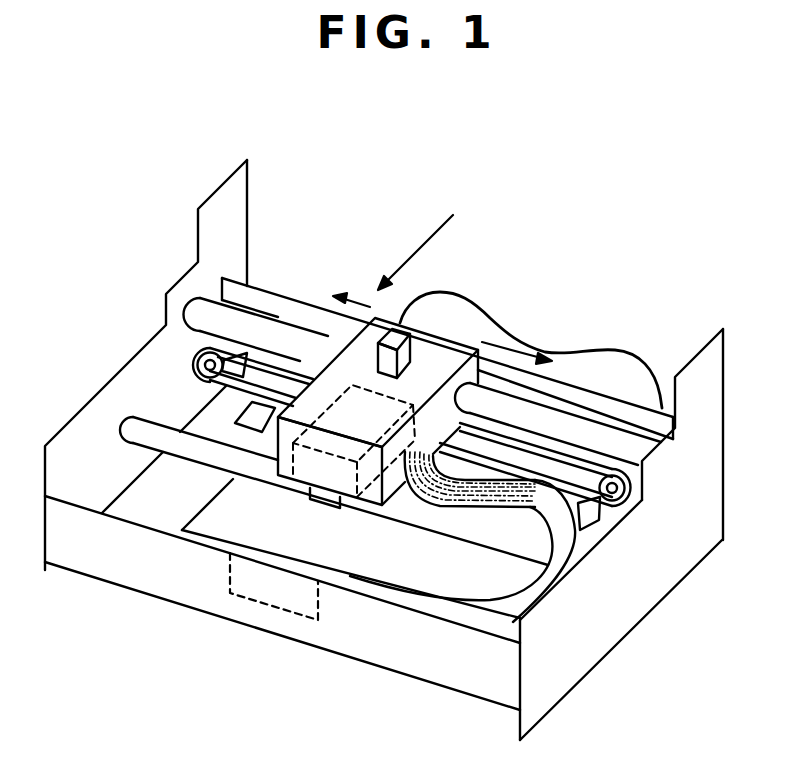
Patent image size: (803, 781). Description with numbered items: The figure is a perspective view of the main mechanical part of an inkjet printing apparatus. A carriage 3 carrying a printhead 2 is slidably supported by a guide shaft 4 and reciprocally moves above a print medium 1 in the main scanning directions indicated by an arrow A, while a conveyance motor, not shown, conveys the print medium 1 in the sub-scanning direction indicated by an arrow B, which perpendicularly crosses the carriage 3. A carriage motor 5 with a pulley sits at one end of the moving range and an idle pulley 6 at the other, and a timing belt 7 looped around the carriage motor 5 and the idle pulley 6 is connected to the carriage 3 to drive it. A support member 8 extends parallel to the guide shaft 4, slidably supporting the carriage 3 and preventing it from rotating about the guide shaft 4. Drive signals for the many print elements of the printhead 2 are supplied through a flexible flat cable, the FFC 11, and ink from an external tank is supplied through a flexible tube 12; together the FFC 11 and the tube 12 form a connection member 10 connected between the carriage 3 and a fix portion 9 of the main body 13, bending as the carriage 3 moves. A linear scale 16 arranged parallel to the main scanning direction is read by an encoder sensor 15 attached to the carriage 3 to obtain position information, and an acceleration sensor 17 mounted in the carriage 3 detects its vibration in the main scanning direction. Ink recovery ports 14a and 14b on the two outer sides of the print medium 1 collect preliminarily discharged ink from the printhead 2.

The print medium 1 is at (528, 333).
The printhead 2 is at (415, 403).
The carriage 3 is at (457, 355).
The guide shaft 4 is at (257, 330).
The carriage motor 5 is at (210, 360).
The idle pulley 6 is at (625, 486).
The timing belt 7 is at (560, 447).
The support member 8 is at (190, 453).
The fix portion 9 is at (270, 593).
The connection member 10 is at (727, 636).
The FFC (Flexible Flat Cable) 11 is at (565, 538).
The tube 12 is at (508, 507).
The main body 13 is at (407, 648).
The ink recovery port 14a is at (593, 517).
The ink recovery port 14b is at (250, 420).
The encoder sensor 15 is at (405, 333).
The linear scale 16 is at (285, 307).
The acceleration sensor 17 is at (575, 460).
The arrow A is at (363, 300).
The arrow B is at (424, 242).